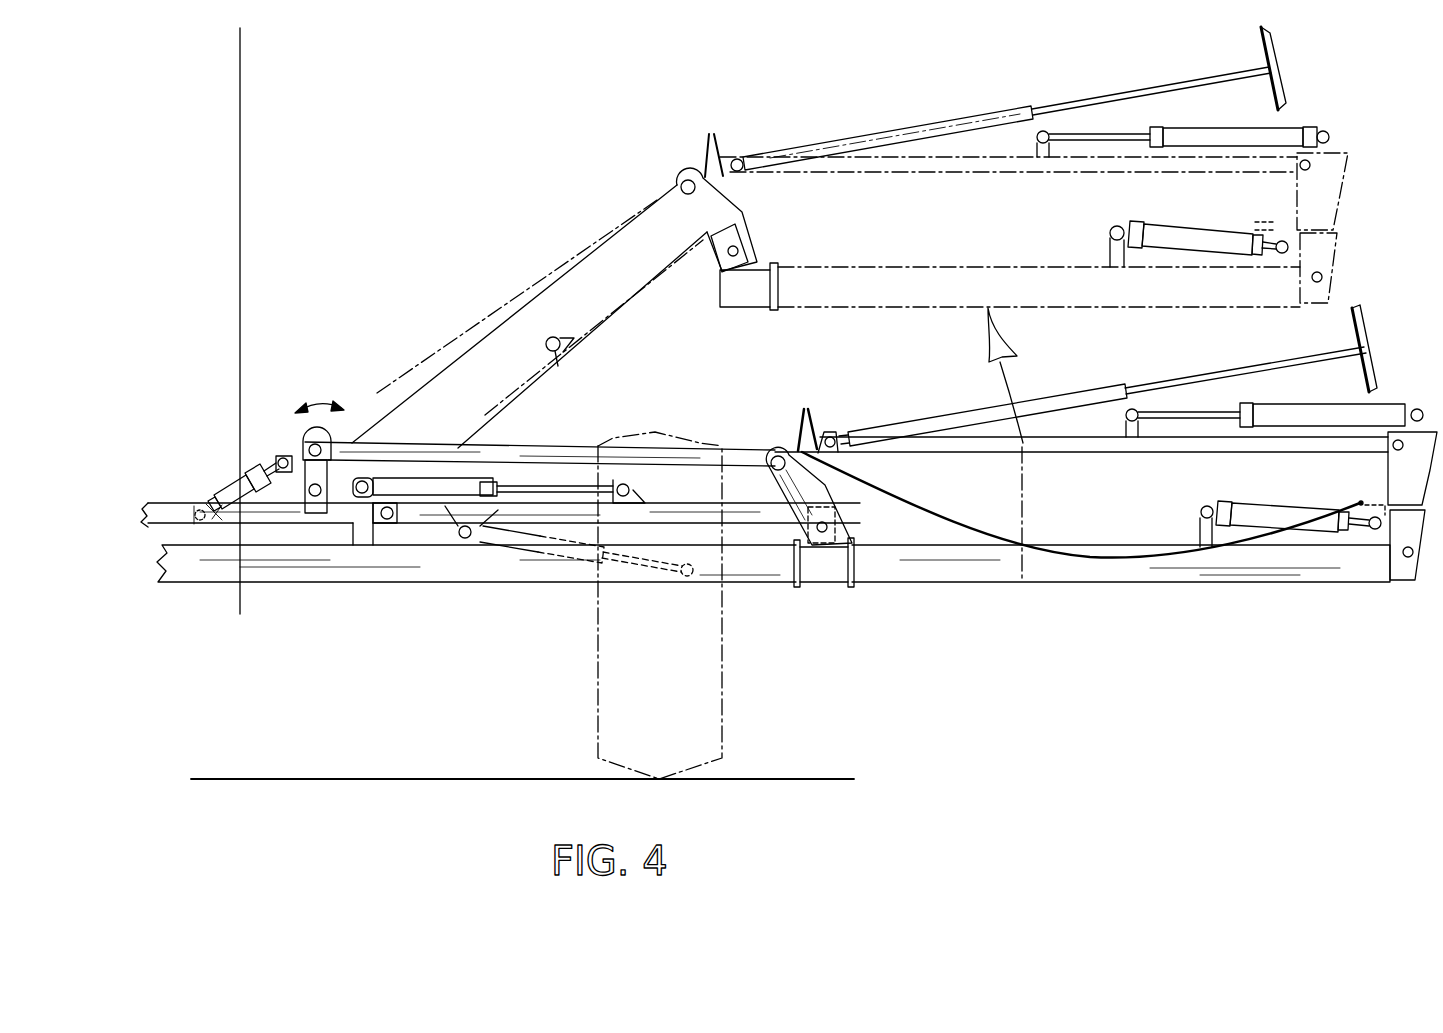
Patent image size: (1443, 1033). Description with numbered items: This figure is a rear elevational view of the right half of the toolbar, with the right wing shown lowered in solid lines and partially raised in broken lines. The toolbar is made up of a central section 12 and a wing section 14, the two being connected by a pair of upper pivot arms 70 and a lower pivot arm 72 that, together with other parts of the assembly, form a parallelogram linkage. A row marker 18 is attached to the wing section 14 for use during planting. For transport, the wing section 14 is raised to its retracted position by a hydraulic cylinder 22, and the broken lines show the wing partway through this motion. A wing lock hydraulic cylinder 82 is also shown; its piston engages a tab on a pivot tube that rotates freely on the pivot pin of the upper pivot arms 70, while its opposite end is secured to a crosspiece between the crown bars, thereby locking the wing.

The central section 12 is at (475, 572).
The wing section 14 is at (1063, 570).
The row marker 18 is at (1363, 320).
The hydraulic cylinder 22 is at (396, 497).
The upper pivot arm 70 is at (567, 444).
The lower pivot arm 72 is at (670, 503).
The wing lock hydraulic cylinder 82 is at (233, 483).